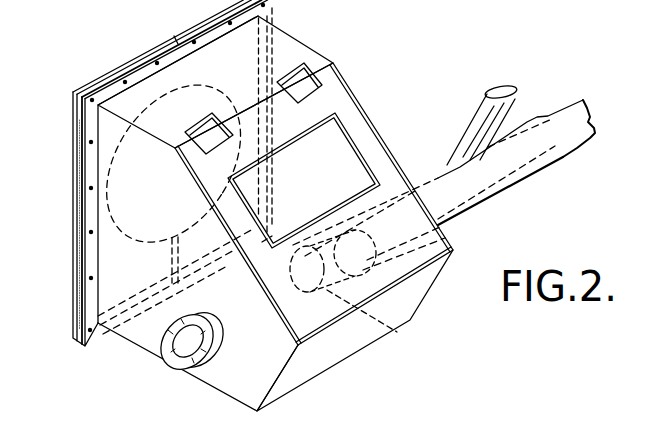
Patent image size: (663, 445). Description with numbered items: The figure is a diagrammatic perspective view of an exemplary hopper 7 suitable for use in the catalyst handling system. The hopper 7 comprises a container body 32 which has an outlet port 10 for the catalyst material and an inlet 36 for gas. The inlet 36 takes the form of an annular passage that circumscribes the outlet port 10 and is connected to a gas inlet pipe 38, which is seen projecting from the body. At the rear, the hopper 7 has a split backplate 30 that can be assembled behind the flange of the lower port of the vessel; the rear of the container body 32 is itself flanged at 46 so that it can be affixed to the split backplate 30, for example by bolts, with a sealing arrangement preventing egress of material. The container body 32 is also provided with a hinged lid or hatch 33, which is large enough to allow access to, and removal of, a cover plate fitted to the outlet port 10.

The split backplate 30 is at (97, 79).
The flange 46 is at (88, 250).
The hopper 7 is at (350, 65).
The hinged lid or hatch 33 is at (368, 133).
The container body 32 is at (237, 385).
The gas inlet pipe 38 is at (473, 123).
The outlet port 10 is at (580, 110).
The inlet 36 is at (291, 280).